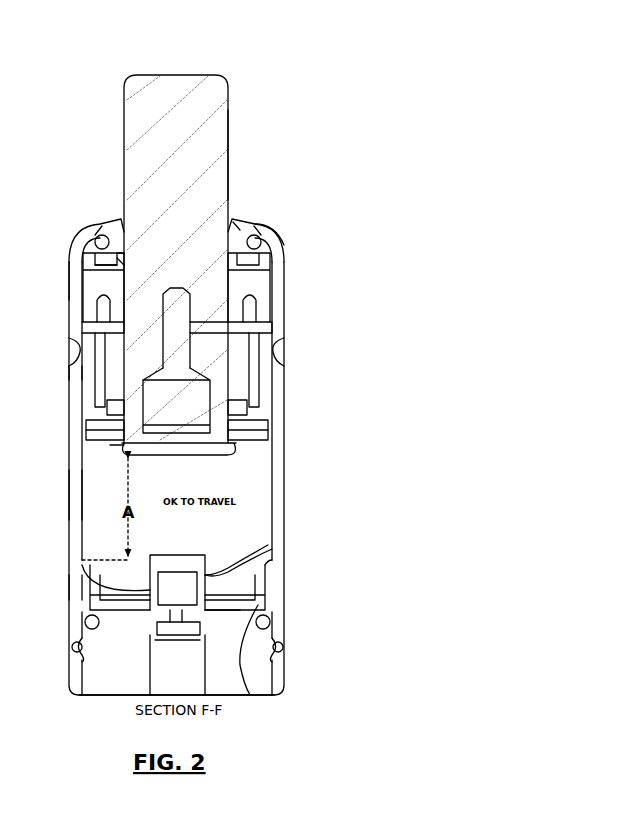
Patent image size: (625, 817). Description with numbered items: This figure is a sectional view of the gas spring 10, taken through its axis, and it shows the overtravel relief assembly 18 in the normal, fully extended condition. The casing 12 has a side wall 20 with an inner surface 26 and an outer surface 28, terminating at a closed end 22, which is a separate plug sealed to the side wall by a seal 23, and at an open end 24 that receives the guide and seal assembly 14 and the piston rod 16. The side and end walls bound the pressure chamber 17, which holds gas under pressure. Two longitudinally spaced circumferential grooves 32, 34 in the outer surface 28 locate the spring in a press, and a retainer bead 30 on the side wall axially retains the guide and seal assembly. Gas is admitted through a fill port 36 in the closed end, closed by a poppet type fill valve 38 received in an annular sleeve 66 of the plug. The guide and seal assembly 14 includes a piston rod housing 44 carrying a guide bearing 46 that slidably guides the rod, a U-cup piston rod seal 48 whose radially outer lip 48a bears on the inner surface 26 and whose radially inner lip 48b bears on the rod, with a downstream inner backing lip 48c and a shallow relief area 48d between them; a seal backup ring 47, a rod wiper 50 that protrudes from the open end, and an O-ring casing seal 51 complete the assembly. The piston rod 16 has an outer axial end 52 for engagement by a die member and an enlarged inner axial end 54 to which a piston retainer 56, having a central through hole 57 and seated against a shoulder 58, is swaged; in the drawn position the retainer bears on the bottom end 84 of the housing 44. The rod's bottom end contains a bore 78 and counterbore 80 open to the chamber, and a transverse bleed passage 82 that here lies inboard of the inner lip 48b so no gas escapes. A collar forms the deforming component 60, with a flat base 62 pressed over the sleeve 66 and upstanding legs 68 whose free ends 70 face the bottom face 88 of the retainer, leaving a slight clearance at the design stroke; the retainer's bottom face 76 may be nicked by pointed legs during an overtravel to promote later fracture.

The gas spring 10 is at (92, 80).
The casing 12 is at (53, 703).
The guide and seal assembly 14 is at (104, 218).
The piston rod 16 is at (256, 123).
The pressure chamber 17 is at (236, 556).
The overtravel relief assembly 18 is at (287, 227).
The side wall 20 is at (76, 489).
The closed end 22 is at (90, 712).
The seal 23 is at (84, 622).
The open end 24 is at (252, 226).
The inner surface 26 is at (82, 520).
The outer surface 28 is at (72, 588).
The retainer bead 30 is at (81, 362).
The circumferential groove 32 is at (72, 350).
The circumferential groove 34 is at (70, 650).
The fill port 36 is at (190, 682).
The fill valve 38 is at (172, 590).
The piston rod housing 44 is at (92, 405).
The guide bearing 46 is at (100, 372).
The seal backup ring 47 is at (96, 262).
The piston rod seal 48 is at (98, 283).
The radially outer lip 48a is at (94, 310).
The radially inner lip 48b is at (250, 303).
The downstream inner backing lip 48c is at (126, 246).
The relief area 48d is at (125, 258).
The rod wiper 50 is at (238, 225).
The casing seal 51 is at (282, 247).
The outer axial end 52 is at (200, 62).
The inner axial end 54 is at (106, 509).
The piston retainer 56 is at (110, 436).
The central through hole 57 is at (240, 433).
The shoulder 58 is at (258, 427).
The deforming component 60 is at (270, 583).
The base 62 is at (237, 618).
The annular sleeve 66 is at (268, 545).
The upstanding legs 68 is at (92, 570).
The free ends 70 is at (272, 560).
The bottom face 76 is at (250, 695).
The bore 78 is at (193, 300).
The counterbore 80 is at (200, 457).
The transverse bleed passage 82 is at (279, 354).
The bottom end 84 is at (96, 423).
The bottom face 88 is at (110, 450).